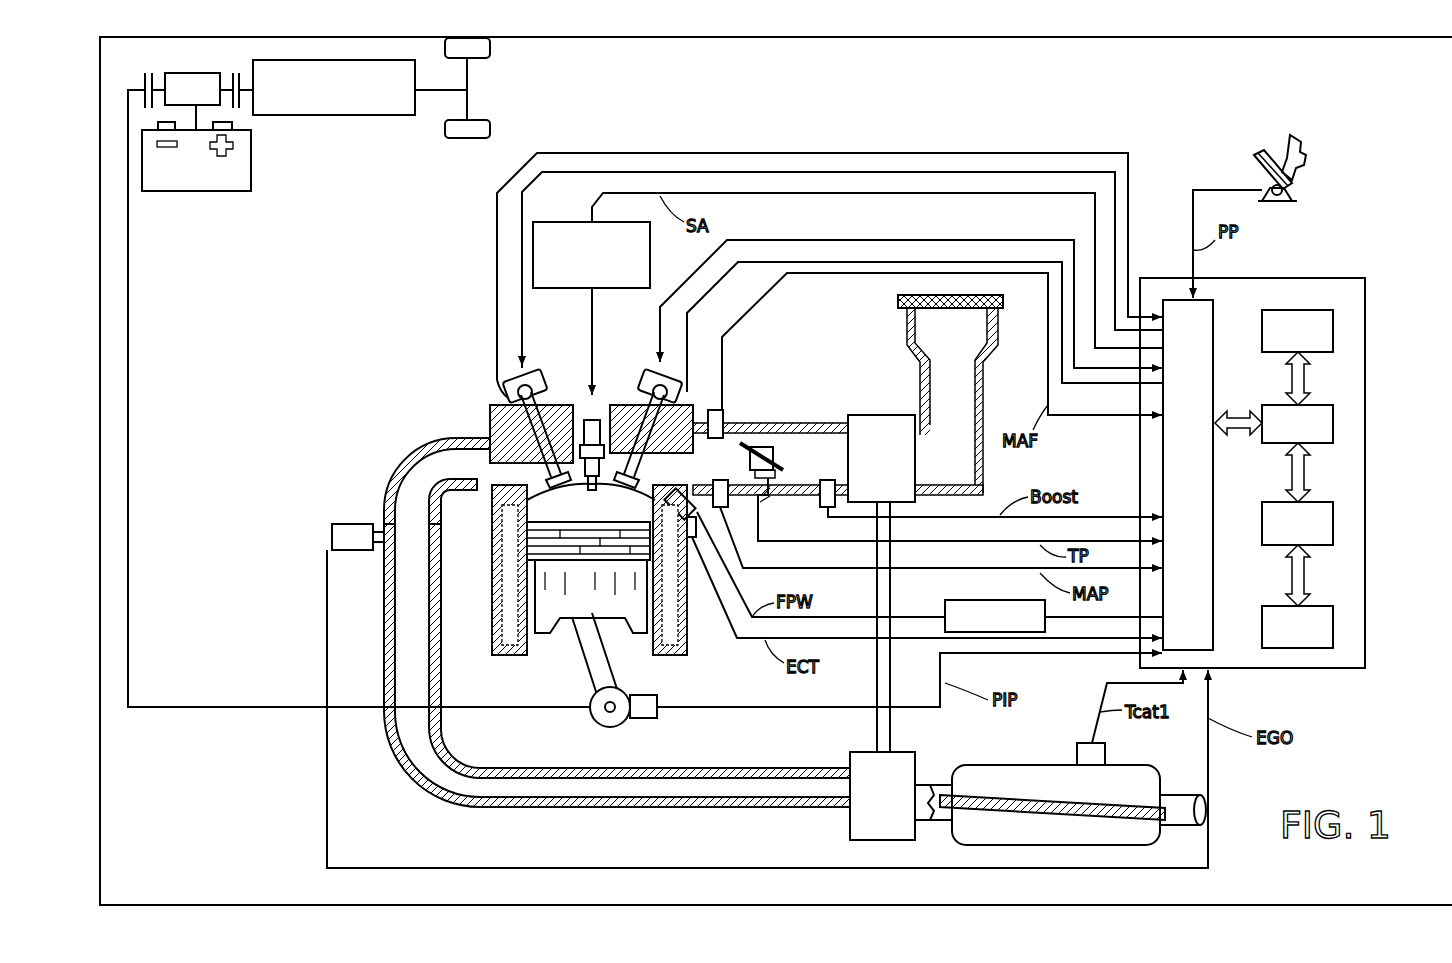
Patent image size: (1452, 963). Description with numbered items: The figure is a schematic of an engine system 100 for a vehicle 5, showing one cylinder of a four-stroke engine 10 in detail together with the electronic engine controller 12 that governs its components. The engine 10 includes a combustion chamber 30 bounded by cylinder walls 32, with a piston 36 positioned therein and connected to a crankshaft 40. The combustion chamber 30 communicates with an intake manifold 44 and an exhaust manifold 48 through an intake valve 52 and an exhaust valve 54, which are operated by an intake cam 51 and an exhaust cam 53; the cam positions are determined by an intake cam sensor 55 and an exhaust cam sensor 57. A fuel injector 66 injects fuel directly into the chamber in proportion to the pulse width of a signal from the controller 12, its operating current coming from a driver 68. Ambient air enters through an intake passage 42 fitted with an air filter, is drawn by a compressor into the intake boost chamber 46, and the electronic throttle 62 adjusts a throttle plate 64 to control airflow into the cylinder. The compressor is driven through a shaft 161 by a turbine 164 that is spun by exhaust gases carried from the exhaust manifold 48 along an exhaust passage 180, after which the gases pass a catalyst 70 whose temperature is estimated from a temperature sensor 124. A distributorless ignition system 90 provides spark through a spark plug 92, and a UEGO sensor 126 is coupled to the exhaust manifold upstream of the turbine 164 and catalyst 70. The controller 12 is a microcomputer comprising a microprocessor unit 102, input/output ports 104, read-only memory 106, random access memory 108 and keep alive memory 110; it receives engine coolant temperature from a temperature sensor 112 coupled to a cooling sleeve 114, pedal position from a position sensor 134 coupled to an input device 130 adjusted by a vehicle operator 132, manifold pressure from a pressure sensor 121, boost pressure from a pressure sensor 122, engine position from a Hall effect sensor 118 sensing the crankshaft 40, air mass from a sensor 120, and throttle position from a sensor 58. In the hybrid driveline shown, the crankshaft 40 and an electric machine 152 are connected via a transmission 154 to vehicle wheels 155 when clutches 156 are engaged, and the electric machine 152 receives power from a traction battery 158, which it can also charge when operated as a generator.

The vehicle 5 is at (1015, 40).
The engine 10 is at (425, 356).
The electronic engine controller 12 is at (1365, 278).
The combustion chamber 30 is at (500, 608).
The cylinder walls 32 is at (532, 650).
The piston 36 is at (575, 615).
The crankshaft 40 is at (598, 725).
The intake passage 42 is at (952, 400).
The intake manifold 44 is at (770, 459).
The intake boost chamber 46 is at (891, 472).
The exhaust manifold 48 is at (617, 622).
The intake cam 51 is at (658, 378).
The intake valve 52 is at (596, 470).
The exhaust cam 53 is at (522, 378).
The exhaust valve 54 is at (497, 440).
The intake cam sensor 55 is at (672, 400).
The exhaust cam sensor 57 is at (508, 392).
The throttle position sensor 58 is at (728, 500).
The electronic throttle 62 is at (858, 415).
The throttle plate 64 is at (755, 447).
The fuel injector 66 is at (684, 494).
The driver 68 is at (975, 600).
The exhaust catalyst 70 is at (1128, 768).
The distributorless ignition system 90 is at (548, 222).
The spark plug 92 is at (584, 428).
The engine system 100 is at (1358, 96).
The microprocessor unit 102 is at (1333, 425).
The input/output ports 104 is at (1215, 305).
The read-only memory 106 is at (1333, 325).
The random access memory 108 is at (1333, 525).
The keep alive memory 110 is at (1333, 628).
The temperature sensor 112 is at (700, 545).
The cooling sleeve 114 is at (668, 560).
The Hall effect sensor 118 is at (652, 718).
The air mass sensor 120 is at (720, 410).
The manifold pressure sensor 121 is at (735, 527).
The boost pressure sensor 122 is at (822, 502).
The catalyst temperature sensor 124 is at (1077, 752).
The UEGO sensor 126 is at (332, 528).
The input device 130 is at (1258, 165).
The vehicle operator 132 is at (1305, 152).
The position sensor 134 is at (1292, 196).
The electric machine 152 is at (203, 73).
The transmission 154 is at (390, 115).
The vehicle wheels 155 is at (470, 138).
The clutch 156 is at (146, 85).
The traction battery 158 is at (190, 191).
The turbocharger shaft 161 is at (877, 730).
The turbine 164 is at (850, 830).
The exhaust passage 180 is at (580, 818).